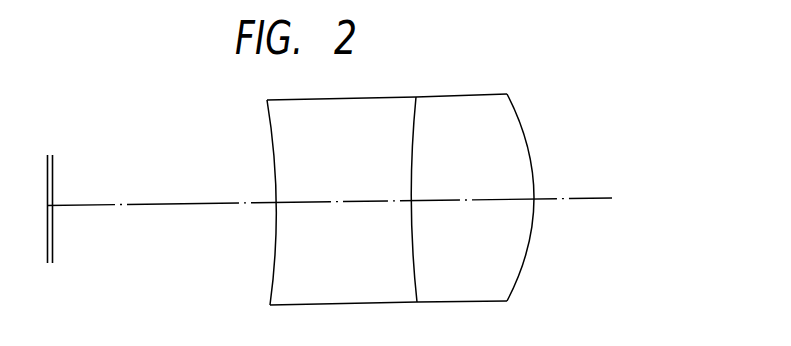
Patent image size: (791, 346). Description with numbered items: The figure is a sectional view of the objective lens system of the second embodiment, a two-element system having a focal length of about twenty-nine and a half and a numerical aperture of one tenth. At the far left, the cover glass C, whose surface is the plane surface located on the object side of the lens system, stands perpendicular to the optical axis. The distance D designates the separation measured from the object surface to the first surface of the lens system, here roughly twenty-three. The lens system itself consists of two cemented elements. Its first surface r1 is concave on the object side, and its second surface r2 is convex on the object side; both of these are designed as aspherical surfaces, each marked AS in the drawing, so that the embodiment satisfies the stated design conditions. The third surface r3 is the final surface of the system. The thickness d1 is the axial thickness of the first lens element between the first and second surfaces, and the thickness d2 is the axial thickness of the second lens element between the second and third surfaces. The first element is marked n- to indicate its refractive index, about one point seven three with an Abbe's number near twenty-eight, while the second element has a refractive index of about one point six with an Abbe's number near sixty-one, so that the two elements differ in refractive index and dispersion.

The cover glass C is at (48, 193).
The distance from object surface to first surface D is at (150, 204).
The aspherical surface AS is at (273, 163).
The radius of curvature of first surface r1 is at (272, 255).
The radius of curvature of second surface r2 is at (412, 253).
The radius of curvature of third surface r3 is at (525, 258).
The thickness of first lens element d1 is at (340, 200).
The thickness of second lens element d2 is at (462, 197).
The refractive index of first lens element n- is at (342, 201).